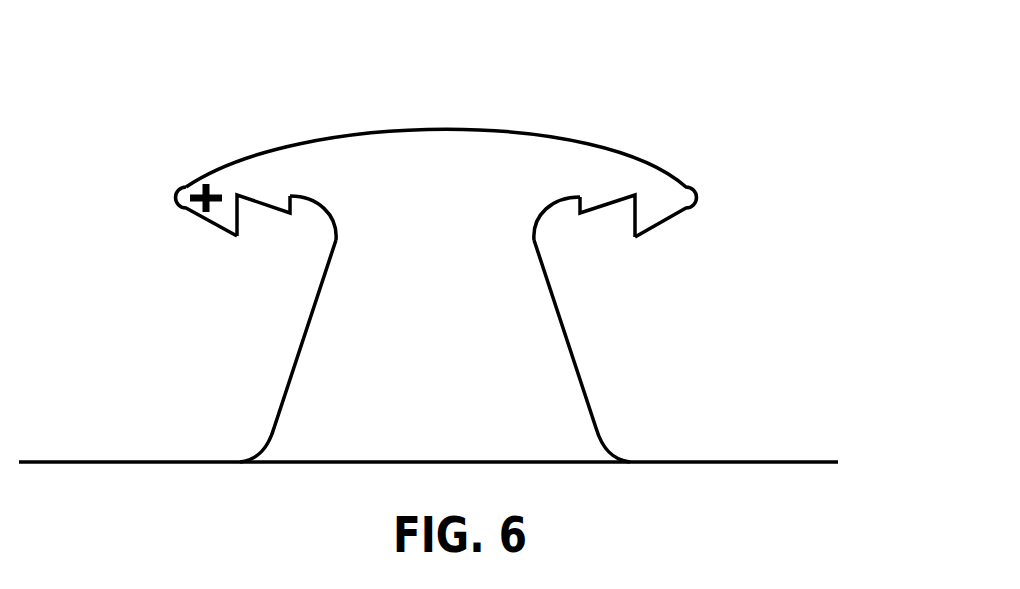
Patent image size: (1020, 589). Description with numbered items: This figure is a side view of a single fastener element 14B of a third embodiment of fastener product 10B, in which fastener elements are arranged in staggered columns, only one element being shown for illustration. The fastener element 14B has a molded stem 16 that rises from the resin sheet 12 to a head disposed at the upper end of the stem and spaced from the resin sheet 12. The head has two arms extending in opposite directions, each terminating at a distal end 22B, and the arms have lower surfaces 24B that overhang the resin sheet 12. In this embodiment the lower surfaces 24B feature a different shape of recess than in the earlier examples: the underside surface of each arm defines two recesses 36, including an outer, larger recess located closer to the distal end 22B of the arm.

The fastener product 10B is at (838, 240).
The resin sheet 12 is at (745, 460).
The fastener element 14B is at (633, 104).
The stem 16 is at (590, 413).
The distal end 22B is at (178, 188).
The lower surface 24B is at (621, 262).
The recesses 36 is at (307, 248).